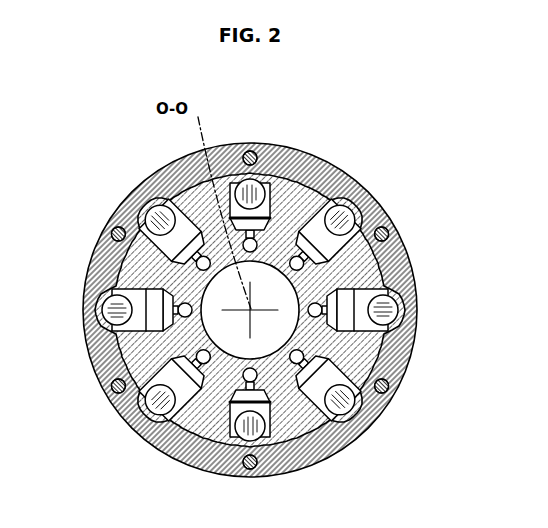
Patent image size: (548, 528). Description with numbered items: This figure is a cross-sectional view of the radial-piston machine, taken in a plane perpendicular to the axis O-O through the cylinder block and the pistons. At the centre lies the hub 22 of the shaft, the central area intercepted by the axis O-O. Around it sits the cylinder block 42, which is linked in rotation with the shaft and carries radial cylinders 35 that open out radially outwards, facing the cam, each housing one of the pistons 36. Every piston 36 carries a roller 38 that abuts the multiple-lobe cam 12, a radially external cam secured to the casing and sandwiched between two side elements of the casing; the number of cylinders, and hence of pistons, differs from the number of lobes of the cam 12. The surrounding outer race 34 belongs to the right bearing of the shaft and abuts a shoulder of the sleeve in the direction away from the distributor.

The multiple-lobe cam 12 is at (340, 442).
The hub 22 is at (263, 294).
The outer race 34 is at (146, 271).
The radial cylinders 35 is at (378, 348).
The pistons 36 is at (250, 310).
The roller 38 is at (381, 311).
The cylinder block 42 is at (148, 352).